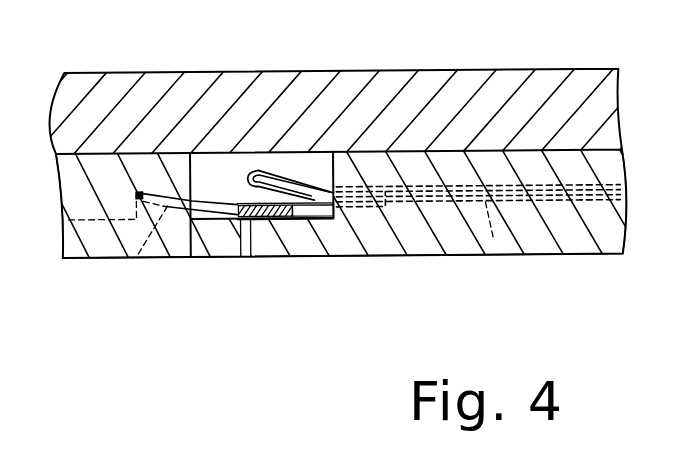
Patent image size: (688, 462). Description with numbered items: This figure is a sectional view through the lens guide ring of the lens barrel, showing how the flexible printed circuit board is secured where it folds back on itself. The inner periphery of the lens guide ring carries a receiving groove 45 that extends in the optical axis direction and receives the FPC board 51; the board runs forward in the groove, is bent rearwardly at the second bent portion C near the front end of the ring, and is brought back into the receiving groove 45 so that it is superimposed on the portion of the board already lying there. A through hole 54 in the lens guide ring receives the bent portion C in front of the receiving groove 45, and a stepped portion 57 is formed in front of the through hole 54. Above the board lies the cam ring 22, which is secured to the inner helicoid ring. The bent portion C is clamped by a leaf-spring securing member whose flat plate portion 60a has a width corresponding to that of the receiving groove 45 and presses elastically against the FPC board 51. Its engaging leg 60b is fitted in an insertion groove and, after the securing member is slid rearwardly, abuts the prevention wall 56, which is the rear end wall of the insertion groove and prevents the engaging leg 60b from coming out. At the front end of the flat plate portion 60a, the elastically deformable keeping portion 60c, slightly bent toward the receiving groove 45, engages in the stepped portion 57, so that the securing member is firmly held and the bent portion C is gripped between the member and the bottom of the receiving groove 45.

The cam ring 22 is at (330, 107).
The through hole 54 is at (213, 167).
The second bent portion C is at (260, 174).
The stepped portion 57 is at (137, 257).
The keeping portion 60c is at (199, 207).
The engaging leg 60b is at (255, 258).
The prevention wall 56 is at (303, 243).
The flat plate portion 60a is at (363, 209).
The FPC board 51 is at (505, 255).
The receiving groove 45 is at (573, 238).